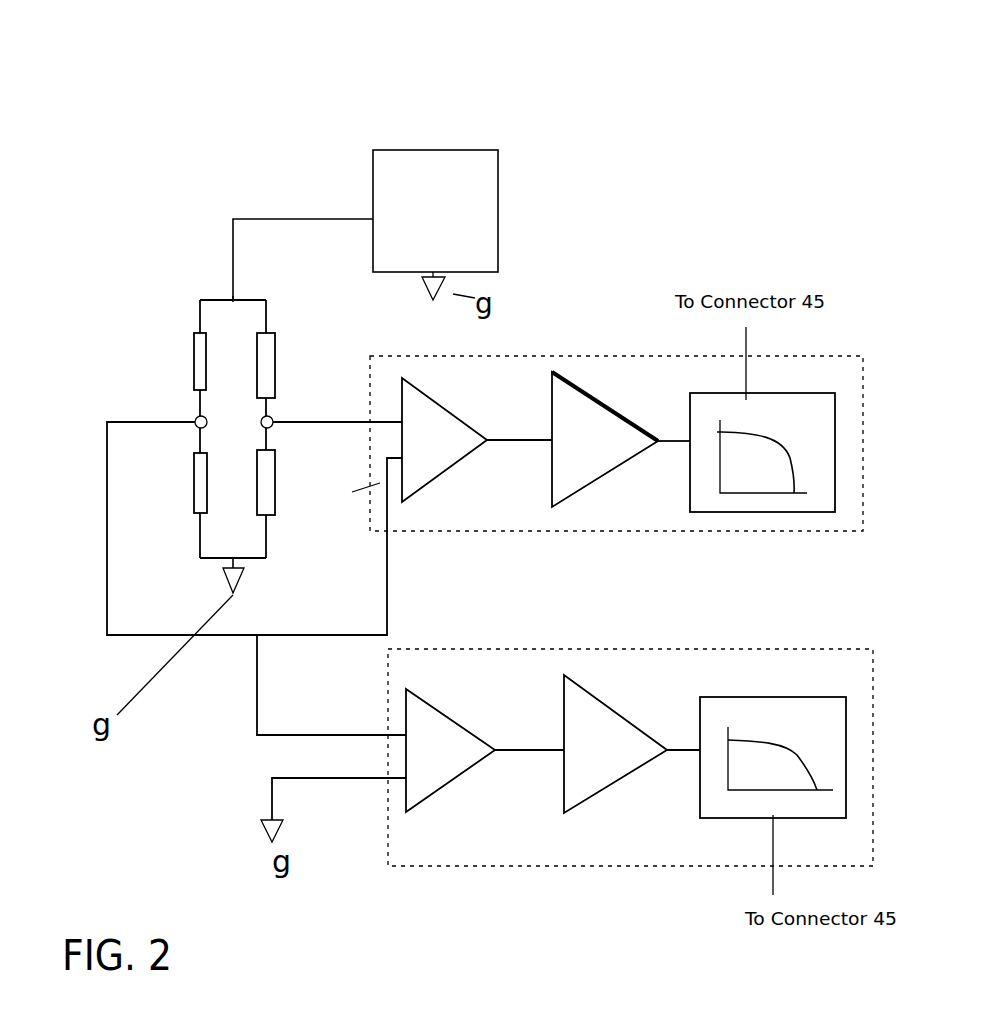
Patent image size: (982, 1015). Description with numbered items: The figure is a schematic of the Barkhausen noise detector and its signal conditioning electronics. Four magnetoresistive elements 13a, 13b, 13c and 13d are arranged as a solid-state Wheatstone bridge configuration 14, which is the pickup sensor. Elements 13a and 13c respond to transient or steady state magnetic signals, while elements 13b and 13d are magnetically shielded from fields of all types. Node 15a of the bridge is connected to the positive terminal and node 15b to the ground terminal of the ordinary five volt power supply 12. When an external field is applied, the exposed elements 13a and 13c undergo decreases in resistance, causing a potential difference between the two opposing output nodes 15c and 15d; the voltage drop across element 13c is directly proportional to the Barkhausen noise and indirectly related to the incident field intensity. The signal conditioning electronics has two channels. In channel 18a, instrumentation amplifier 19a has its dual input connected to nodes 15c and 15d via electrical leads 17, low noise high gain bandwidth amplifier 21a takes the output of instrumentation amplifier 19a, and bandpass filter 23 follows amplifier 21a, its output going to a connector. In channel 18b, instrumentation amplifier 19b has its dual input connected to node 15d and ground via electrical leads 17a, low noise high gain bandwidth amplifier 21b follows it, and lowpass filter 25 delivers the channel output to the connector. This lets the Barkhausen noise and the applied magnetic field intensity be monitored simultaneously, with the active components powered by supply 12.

The 5 volt power supply 12 is at (447, 142).
The magnetoresistive element 13a is at (278, 350).
The magnetoresistive element 13b is at (268, 495).
The magnetoresistive element 13c is at (188, 478).
The magnetoresistive element 13d is at (193, 365).
The Wheatstone bridge configuration 14 is at (200, 282).
The node 15a is at (232, 300).
The node 15b is at (235, 553).
The node 15c is at (262, 418).
The node 15d is at (196, 417).
The electrical leads 17 is at (389, 422).
The electrical leads 17a is at (263, 720).
The channel 18a is at (603, 362).
The channel 18b is at (558, 868).
The instrumentation amplifier 19a is at (458, 467).
The instrumentation amplifier 19b is at (456, 793).
The low noise high gain bandwidth amplifier 21a is at (595, 485).
The low noise high gain bandwidth amplifier 21b is at (613, 803).
The bandpass filter 23 is at (727, 517).
The lowpass filter 25 is at (778, 712).